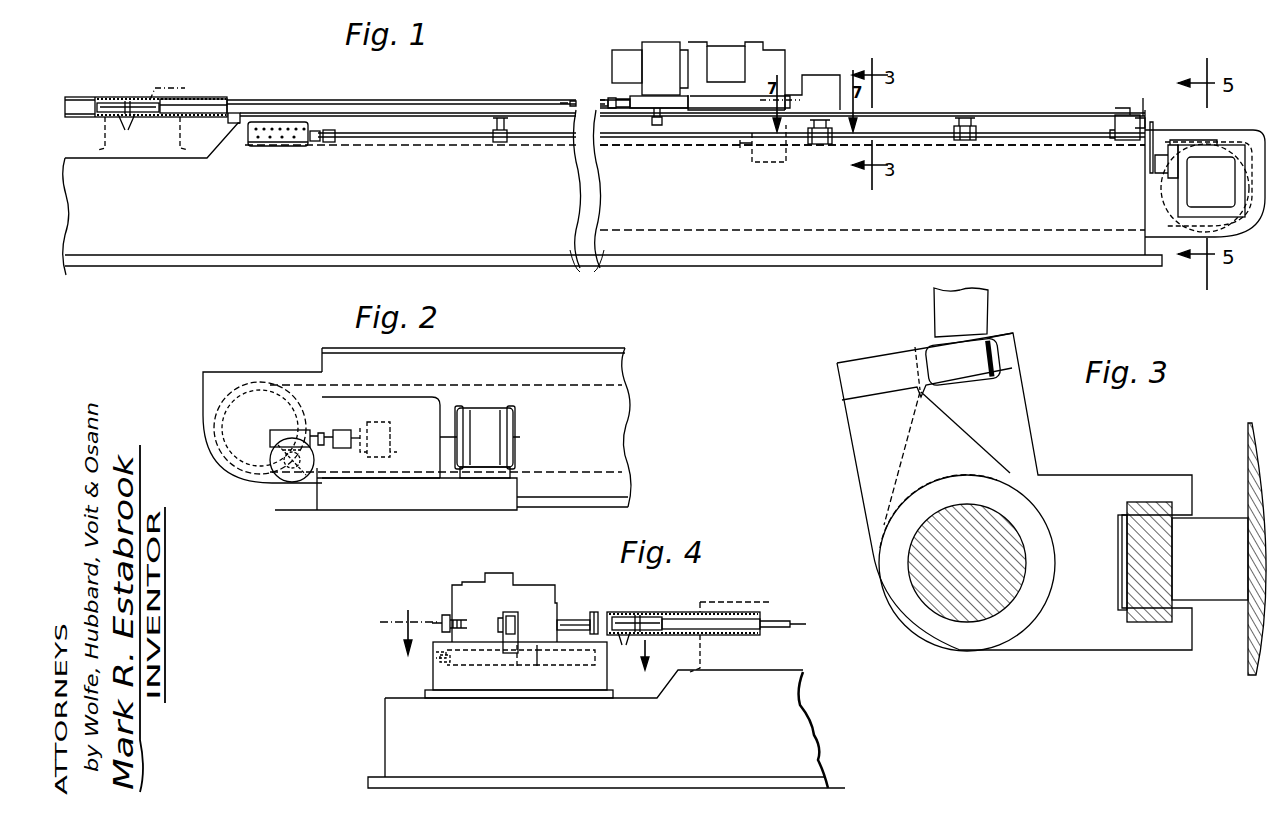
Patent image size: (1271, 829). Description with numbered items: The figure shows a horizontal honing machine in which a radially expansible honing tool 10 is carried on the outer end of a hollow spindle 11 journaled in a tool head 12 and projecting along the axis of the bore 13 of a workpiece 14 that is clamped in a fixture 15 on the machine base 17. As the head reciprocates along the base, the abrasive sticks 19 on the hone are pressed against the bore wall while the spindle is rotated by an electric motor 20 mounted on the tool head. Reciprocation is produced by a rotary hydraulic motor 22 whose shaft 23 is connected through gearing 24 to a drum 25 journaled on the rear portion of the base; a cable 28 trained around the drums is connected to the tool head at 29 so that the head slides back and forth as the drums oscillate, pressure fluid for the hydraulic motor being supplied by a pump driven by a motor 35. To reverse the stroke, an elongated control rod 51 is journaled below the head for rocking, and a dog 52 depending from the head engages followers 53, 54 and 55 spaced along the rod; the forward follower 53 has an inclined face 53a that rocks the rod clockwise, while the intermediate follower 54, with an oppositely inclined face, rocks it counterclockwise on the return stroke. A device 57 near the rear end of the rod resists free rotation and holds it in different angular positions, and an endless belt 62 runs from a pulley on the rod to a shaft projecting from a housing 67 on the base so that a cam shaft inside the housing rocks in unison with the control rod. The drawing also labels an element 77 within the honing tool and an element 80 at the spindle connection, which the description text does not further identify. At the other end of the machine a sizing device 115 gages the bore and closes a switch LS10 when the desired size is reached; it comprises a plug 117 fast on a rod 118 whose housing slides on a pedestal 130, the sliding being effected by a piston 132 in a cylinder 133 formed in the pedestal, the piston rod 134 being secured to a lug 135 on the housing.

In FIG. 1, the honing tool 10 is at (100, 95).
In FIG. 4, the honing tool 10 is at (630, 611).
In FIG. 1, the hollow spindle 11 is at (330, 100).
In FIG. 1, the tool head 12 is at (788, 56).
In FIG. 4, the tool head 12 is at (521, 661).
In FIG. 1, the bore 13 is at (232, 110).
In FIG. 4, the bore 13 is at (718, 640).
In FIG. 1, the workpiece 14 is at (200, 96).
In FIG. 4, the workpiece 14 is at (678, 614).
In FIG. 1, the fixture 15 is at (143, 101).
In FIG. 4, the fixture 15 is at (770, 602).
In FIG. 1, the machine base 17 is at (612, 203).
In FIG. 3, the machine base 17 is at (1253, 630).
In FIG. 4, the machine base 17 is at (812, 745).
In FIG. 1, the abrasive sticks 19 is at (129, 130).
In FIG. 4, the abrasive sticks 19 is at (620, 648).
In FIG. 1, the electric motor 20 is at (655, 44).
In FIG. 2, the rotary hydraulic motor 22 is at (385, 424).
In FIG. 2, the shaft 23 is at (340, 429).
In FIG. 2, the gearing 24 is at (270, 478).
In FIG. 1, the drum 25 is at (1160, 206).
In FIG. 2, the drum 25 is at (228, 400).
In FIG. 1, the cable 28 is at (1040, 146).
In FIG. 2, the cable 28 is at (455, 386).
In FIG. 1, the cable connection 29 is at (750, 163).
In FIG. 2, the motor 35 is at (518, 428).
In FIG. 1, the control rod 51 is at (590, 140).
In FIG. 3, the control rod 51 is at (962, 612).
In FIG. 1, the dog 52 is at (657, 126).
In FIG. 3, the dog 52 is at (1003, 363).
In FIG. 1, the forward follower 53 is at (495, 126).
In FIG. 3, the forward follower 53 is at (990, 330).
In FIG. 3, the inclined face 53a is at (1005, 343).
In FIG. 1, the intermediate follower 54 is at (805, 136).
In FIG. 3, the intermediate follower 54 is at (868, 364).
In FIG. 1, the follower 55 is at (963, 117).
In FIG. 1, the holding device 57 is at (1122, 110).
In FIG. 1, the endless belt 62 is at (1156, 132).
In FIG. 1, the housing 67 is at (1213, 146).
In FIG. 1, the plunger 77 is at (130, 101).
In FIG. 4, the plunger 77 is at (650, 613).
In FIG. 1, the coupling 80 is at (580, 101).
In FIG. 4, the sizing device 115 is at (557, 598).
In FIG. 4, the plug 117 is at (598, 612).
In FIG. 4, the rod 118 is at (556, 621).
In FIG. 4, the pedestal 130 is at (545, 700).
In FIG. 4, the piston 132 is at (533, 692).
In FIG. 4, the cylinder 133 is at (555, 668).
In FIG. 4, the piston rod 134 is at (480, 668).
In FIG. 4, the lug 135 is at (446, 666).
In FIG. 4, the switch LS10 is at (510, 612).